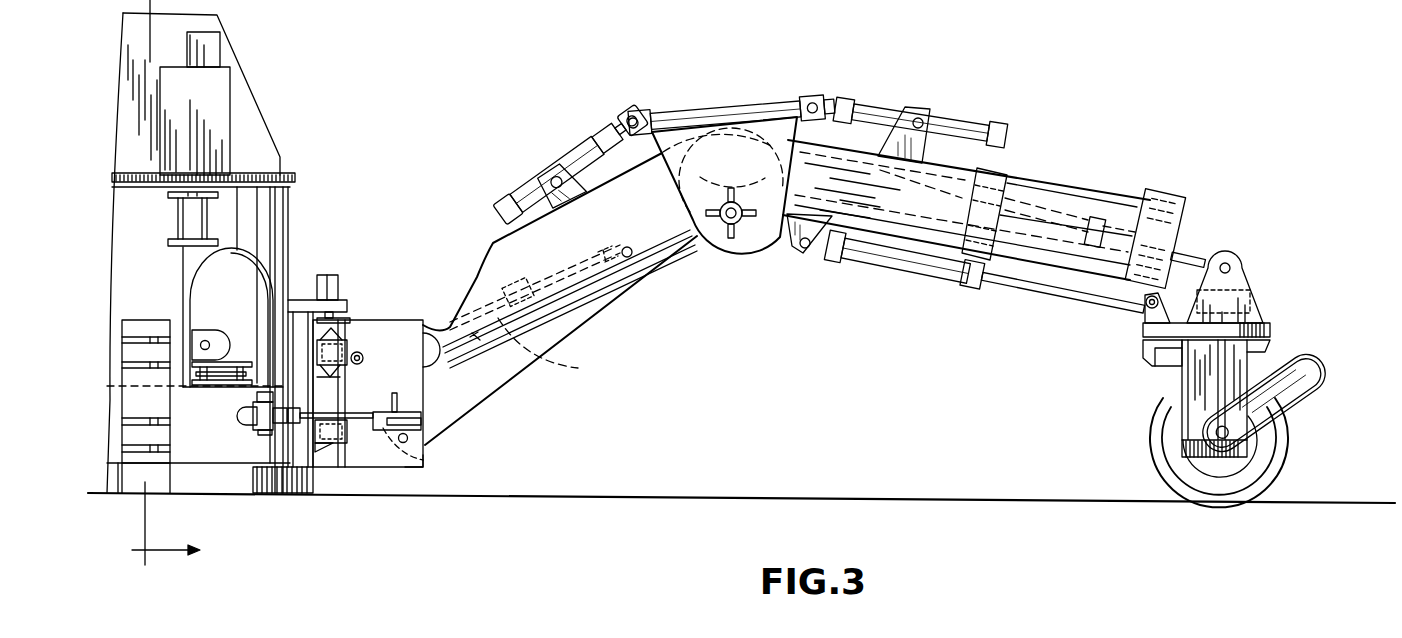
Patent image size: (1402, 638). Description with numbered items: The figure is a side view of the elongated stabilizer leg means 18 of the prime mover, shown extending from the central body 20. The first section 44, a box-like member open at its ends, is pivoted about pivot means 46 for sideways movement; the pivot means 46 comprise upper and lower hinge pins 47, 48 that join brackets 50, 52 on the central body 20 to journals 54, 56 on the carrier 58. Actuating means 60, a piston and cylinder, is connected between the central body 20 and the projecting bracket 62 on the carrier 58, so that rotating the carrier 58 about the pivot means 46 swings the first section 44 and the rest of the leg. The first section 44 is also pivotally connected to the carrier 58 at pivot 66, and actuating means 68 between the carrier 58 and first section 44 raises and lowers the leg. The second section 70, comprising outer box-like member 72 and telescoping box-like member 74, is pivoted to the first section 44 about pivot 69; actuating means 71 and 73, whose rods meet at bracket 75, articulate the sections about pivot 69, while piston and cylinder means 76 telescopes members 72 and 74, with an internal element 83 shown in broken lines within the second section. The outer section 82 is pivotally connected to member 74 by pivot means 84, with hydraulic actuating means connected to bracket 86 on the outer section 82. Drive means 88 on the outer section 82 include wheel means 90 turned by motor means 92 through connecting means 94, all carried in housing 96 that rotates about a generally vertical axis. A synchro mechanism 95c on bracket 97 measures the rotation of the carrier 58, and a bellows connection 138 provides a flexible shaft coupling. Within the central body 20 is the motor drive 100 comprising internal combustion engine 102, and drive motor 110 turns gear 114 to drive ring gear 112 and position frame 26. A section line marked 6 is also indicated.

The section line 6- 6 is at (178, 523).
The leg means 18 is at (732, 265).
The central body 20 is at (275, 210).
The frame 26 is at (245, 100).
The first section 44 is at (637, 222).
The pivot means 46 is at (350, 340).
The upper hinge pin 47 is at (405, 310).
The lower hinge pin 48 is at (332, 454).
The bracket 50 is at (332, 370).
The bracket 52 is at (322, 457).
The journal 54 is at (372, 350).
The journal 56 is at (347, 433).
The carrier 58 is at (425, 468).
The actuating means 60 is at (286, 425).
The projecting bracket 62 is at (423, 407).
The pivot 66 is at (423, 445).
The actuating means 68 is at (572, 368).
The pivot 69 is at (742, 222).
The second section 70 is at (1024, 182).
The actuating means 71 is at (587, 158).
The outer box-like member 72 is at (824, 207).
The actuating means 73 is at (953, 125).
The telescoping box-like member 74 is at (1175, 190).
The bracket 75 is at (707, 113).
The piston and cylinder means 76 is at (923, 268).
The outer section 82 is at (1262, 325).
The piston rod 83 is at (1088, 198).
The pivot means 84 is at (1148, 305).
The bracket 86 is at (1245, 265).
The drive means 88 is at (1147, 452).
The wheel means 90 is at (1278, 457).
The motor means 92 is at (1328, 388).
The connecting means 94 is at (1300, 375).
The synchro mechanism 95c is at (333, 277).
The housing 96 is at (1195, 380).
The bracket 97 is at (303, 300).
The motor drive 100 is at (216, 331).
The internal combustion engine 102 is at (207, 335).
The drive motor 110 is at (190, 220).
The ring gear 112 is at (295, 173).
The gear 114 is at (197, 173).
The bellows connection 138 is at (340, 335).